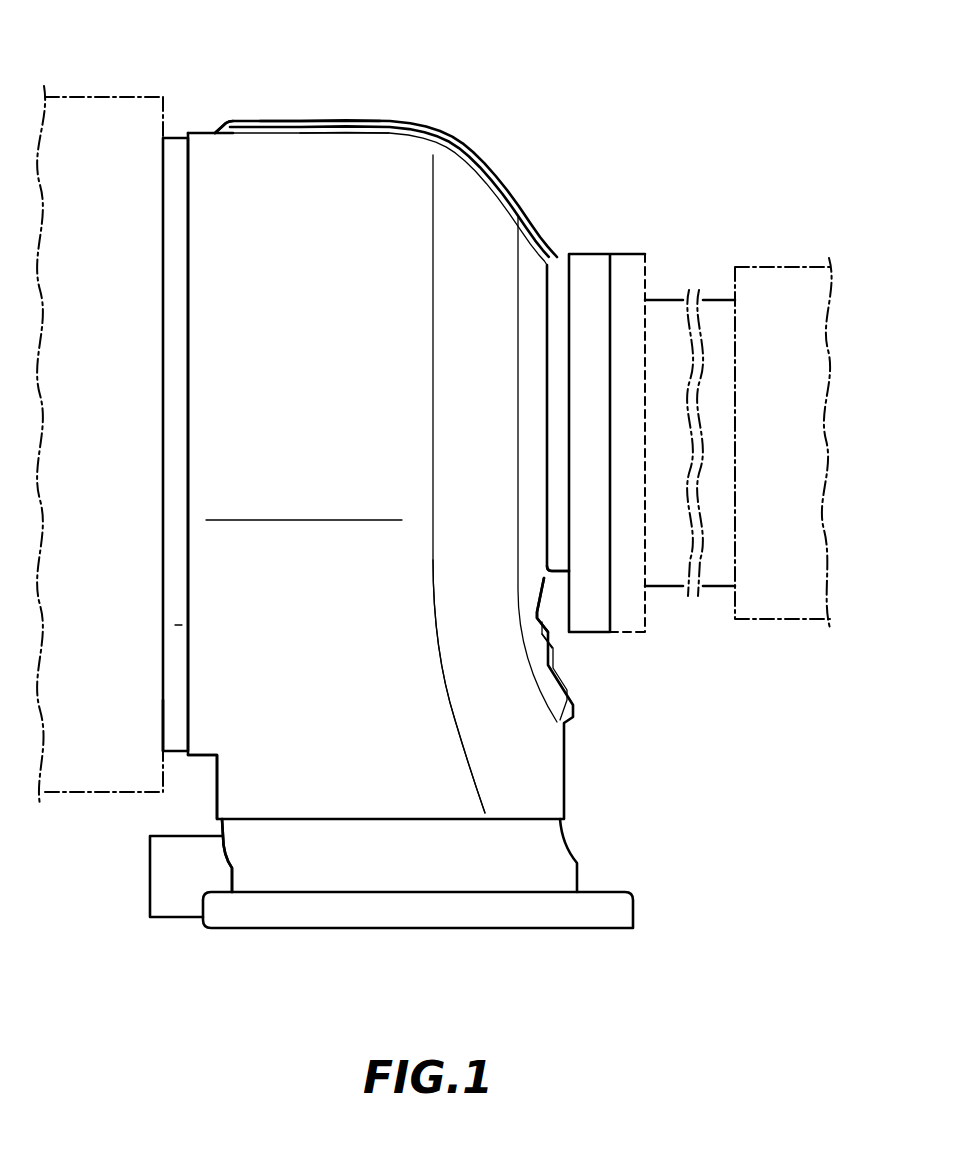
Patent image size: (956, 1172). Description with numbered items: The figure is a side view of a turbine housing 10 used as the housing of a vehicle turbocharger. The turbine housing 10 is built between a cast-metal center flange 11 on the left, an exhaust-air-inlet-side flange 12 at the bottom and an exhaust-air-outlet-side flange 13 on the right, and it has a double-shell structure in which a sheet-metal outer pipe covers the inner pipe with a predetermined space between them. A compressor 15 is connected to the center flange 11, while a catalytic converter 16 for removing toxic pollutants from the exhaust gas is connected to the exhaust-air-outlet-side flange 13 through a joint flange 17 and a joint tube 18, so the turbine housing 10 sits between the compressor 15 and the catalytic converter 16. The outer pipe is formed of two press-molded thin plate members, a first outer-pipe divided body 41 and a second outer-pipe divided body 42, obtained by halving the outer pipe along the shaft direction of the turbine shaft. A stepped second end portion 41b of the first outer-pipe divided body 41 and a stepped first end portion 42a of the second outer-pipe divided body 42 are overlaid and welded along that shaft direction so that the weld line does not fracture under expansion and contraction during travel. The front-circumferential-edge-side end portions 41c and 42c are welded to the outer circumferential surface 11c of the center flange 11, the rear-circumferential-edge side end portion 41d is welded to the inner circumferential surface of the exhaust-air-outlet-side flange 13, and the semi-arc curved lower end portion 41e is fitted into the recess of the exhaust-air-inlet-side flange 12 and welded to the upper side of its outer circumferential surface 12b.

The turbine housing 10 is at (437, 92).
The center flange 11 is at (176, 137).
The outer circumferential surface of the center flange 11c is at (173, 692).
The exhaust-air-inlet-side flange 12 is at (350, 927).
The outer circumferential surface of the exhaust-air-inlet-side flange 12b is at (397, 830).
The exhaust-air-outlet-side flange 13 is at (590, 253).
The compressor 15 is at (97, 97).
The catalytic converter 16 is at (793, 265).
The joint flange 17 is at (650, 265).
The joint tube 18 is at (718, 298).
The first outer-pipe divided body 41 is at (700, 768).
The second end portion of the first outer pipe divided body 41b is at (383, 127).
The front-circumferential-edge-side end portion of the first outer pipe divided body 41c is at (202, 758).
The rear-circumferential-edge side end portion of the first outer pipe divided body 41d is at (562, 548).
The lower end portion of the first outer-pipe divided body 41e is at (452, 797).
The second outer-pipe divided body 42 is at (478, 146).
The first end portion of the second outer pipe divided body 42a is at (325, 120).
The front-circumferential-edge-side end portion of the second outer pipe divided bod 42c is at (213, 130).